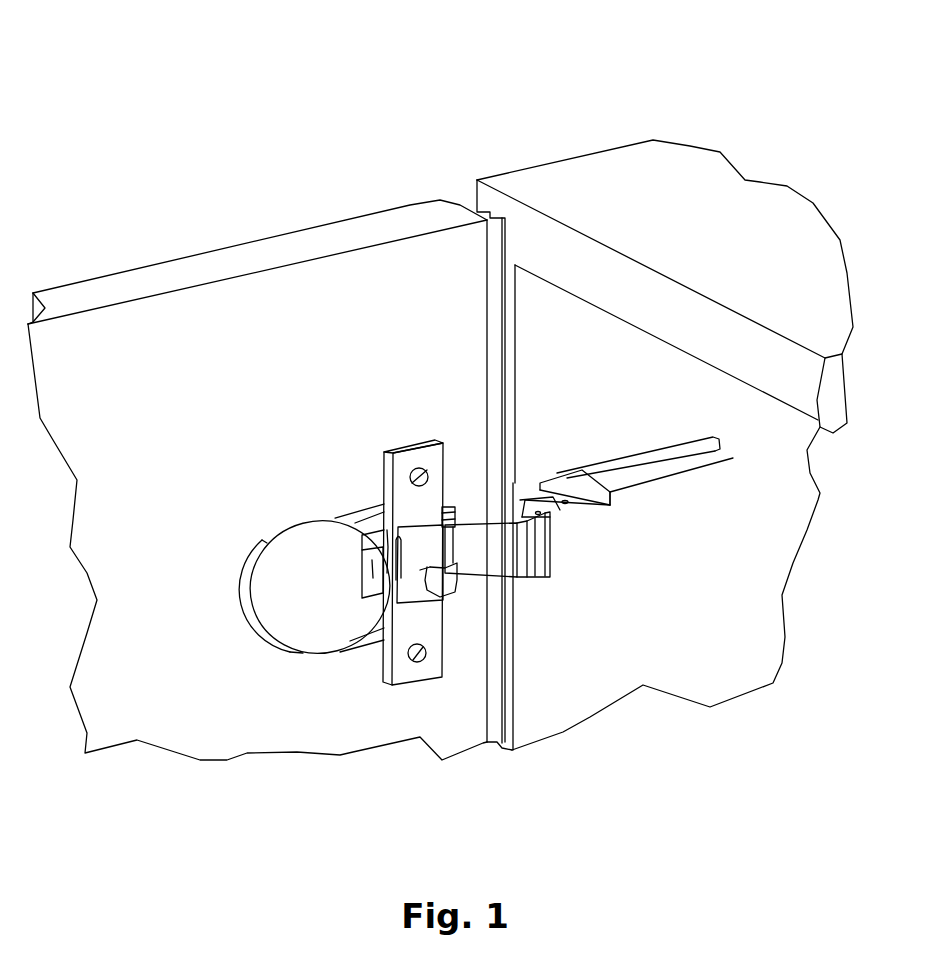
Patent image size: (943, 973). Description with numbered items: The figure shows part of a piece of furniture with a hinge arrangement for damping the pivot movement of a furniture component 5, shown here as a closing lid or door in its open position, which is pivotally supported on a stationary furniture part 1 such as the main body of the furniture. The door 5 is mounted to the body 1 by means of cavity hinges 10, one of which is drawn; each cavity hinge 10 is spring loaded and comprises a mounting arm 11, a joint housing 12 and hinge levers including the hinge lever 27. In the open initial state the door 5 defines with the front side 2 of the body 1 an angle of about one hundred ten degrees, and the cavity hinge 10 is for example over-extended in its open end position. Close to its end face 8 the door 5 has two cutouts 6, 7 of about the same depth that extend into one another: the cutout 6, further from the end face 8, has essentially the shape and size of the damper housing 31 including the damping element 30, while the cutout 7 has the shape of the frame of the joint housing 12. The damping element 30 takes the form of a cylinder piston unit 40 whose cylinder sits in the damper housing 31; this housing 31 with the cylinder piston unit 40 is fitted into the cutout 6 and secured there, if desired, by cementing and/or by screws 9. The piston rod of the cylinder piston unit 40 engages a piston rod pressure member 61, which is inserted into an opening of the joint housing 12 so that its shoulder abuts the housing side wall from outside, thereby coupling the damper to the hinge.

The stationary furniture part 1 is at (683, 330).
The front side 2 is at (662, 231).
The furniture component 5 is at (120, 405).
The cutout 6 is at (267, 543).
The cutout 7 is at (453, 518).
The end face 8 is at (499, 390).
The screws 9 is at (414, 660).
The cavity hinge 10 is at (605, 267).
The mounting arm 11 is at (659, 277).
The joint housing 12 is at (505, 303).
The hinge lever 27 is at (566, 273).
The damping element 30 is at (295, 495).
The damper housing 31 is at (323, 540).
The cylinder piston unit 40 is at (369, 562).
The piston rod pressure member 61 is at (397, 558).